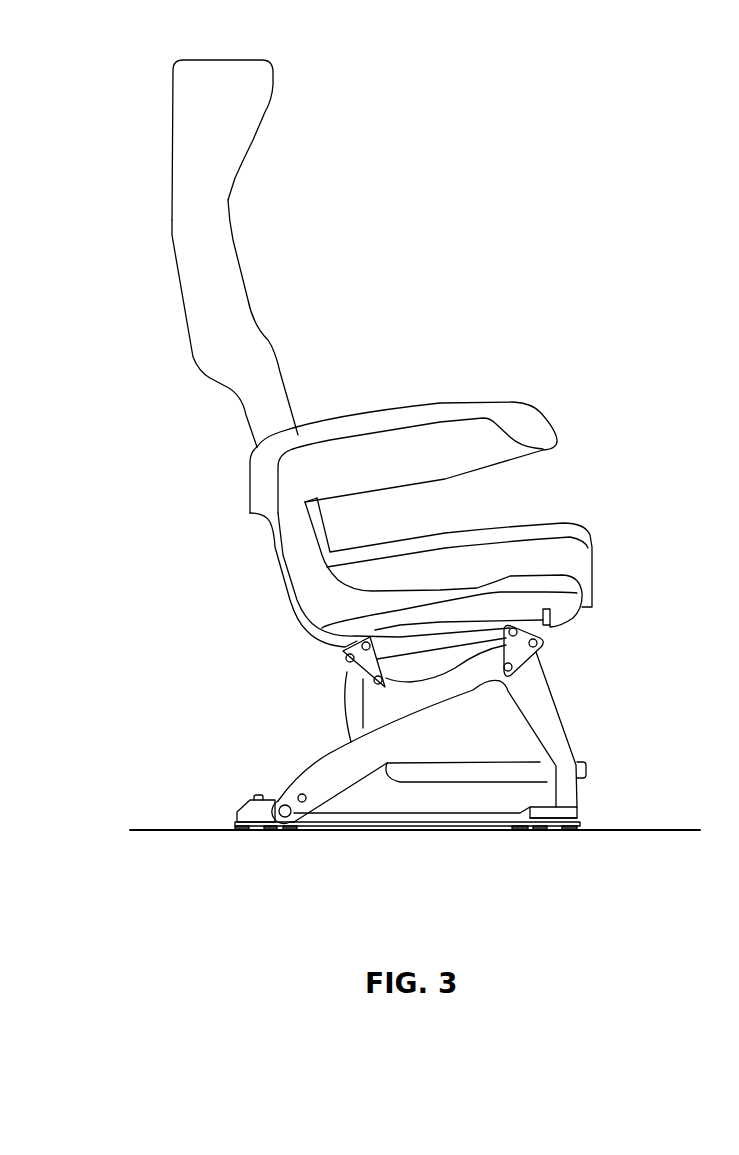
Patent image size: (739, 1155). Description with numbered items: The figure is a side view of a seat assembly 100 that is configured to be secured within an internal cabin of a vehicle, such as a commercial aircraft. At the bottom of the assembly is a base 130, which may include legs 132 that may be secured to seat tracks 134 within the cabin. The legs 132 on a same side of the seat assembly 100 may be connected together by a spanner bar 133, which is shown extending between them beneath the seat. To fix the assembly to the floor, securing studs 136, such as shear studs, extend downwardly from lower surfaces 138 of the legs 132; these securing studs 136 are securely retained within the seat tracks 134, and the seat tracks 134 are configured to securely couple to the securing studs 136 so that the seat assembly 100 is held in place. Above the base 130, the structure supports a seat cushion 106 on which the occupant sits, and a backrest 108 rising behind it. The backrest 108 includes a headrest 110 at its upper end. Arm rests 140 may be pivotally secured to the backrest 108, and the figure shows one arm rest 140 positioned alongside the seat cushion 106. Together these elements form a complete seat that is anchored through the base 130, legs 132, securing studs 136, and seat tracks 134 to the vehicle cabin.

The seat assembly 100 is at (141, 47).
The seat cushion 106 is at (573, 520).
The backrest 108 is at (172, 201).
The headrest 110 is at (245, 157).
The base 130 is at (333, 748).
The legs 132 is at (237, 812).
The spanner bar 133 is at (497, 762).
The seat tracks 134 is at (315, 832).
The securing studs 136 is at (242, 832).
The lower surfaces 138 is at (253, 800).
The arm rests 140 is at (459, 400).